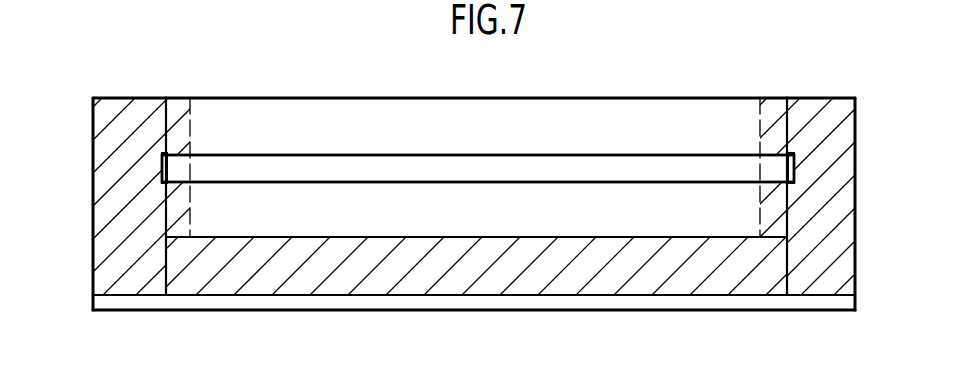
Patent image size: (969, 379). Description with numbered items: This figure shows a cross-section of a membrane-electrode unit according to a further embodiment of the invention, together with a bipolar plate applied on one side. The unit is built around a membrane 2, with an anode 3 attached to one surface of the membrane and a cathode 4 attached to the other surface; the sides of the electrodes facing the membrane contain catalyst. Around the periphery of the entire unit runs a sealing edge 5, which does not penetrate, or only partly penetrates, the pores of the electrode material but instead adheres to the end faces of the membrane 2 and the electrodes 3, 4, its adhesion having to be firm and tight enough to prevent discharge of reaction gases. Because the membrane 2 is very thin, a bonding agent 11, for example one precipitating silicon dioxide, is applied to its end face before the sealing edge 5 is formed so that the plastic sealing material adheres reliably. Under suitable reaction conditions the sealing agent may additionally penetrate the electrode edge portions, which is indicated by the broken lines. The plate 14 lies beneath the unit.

The membrane 2 is at (698, 167).
The anode 3 is at (508, 213).
The cathode 4 is at (572, 125).
The sealing edge 5 is at (117, 133).
The bonding agent 11 is at (163, 168).
The base plate 14 is at (662, 300).